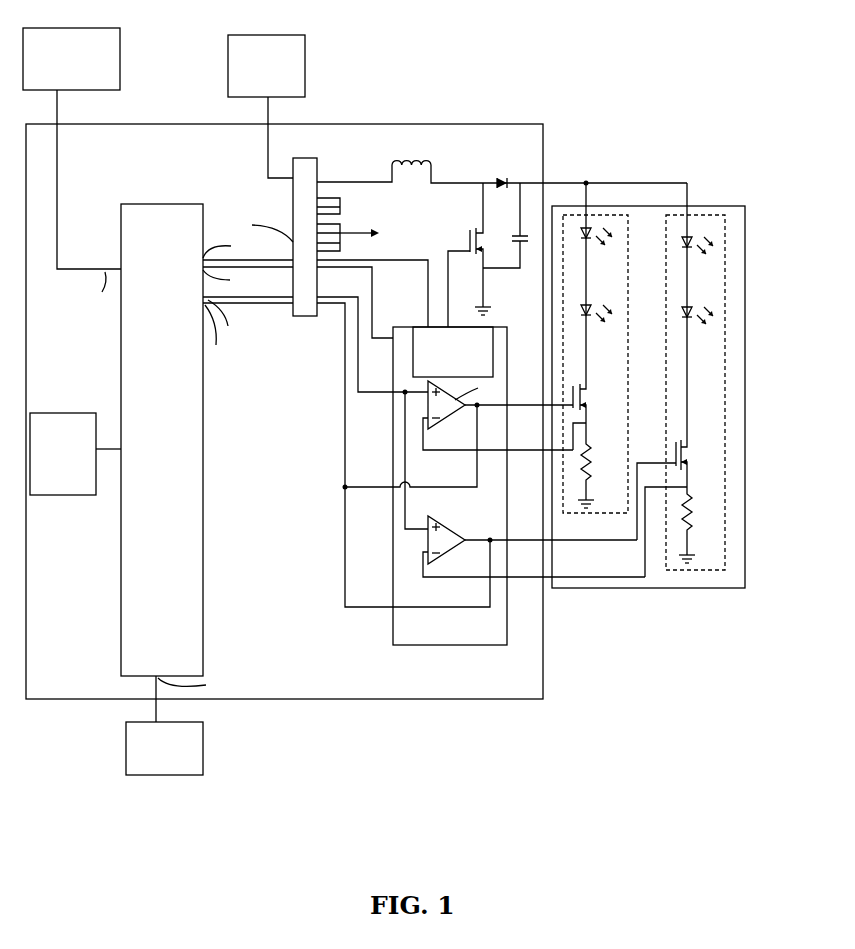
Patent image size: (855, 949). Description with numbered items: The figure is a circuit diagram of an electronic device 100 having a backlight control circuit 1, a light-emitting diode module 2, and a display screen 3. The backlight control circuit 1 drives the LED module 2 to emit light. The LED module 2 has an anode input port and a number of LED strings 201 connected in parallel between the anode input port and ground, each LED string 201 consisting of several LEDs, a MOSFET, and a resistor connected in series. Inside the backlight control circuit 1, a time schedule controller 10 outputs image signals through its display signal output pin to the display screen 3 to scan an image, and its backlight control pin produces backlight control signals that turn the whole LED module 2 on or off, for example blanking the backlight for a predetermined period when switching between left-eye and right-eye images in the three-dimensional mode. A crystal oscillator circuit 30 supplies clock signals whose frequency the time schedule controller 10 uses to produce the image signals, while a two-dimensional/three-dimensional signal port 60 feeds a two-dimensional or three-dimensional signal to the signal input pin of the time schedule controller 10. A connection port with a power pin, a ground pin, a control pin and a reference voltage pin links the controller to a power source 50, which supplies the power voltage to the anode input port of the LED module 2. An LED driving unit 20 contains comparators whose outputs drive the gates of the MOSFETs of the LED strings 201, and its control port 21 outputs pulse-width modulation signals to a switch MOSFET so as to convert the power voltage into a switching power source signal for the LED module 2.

The electronic device 100 is at (578, 68).
The backlight control circuit 1 is at (395, 124).
The light-emitting diode (LED) module 2 is at (716, 206).
The LED string 201 is at (725, 300).
The display screen 3 is at (203, 748).
The time schedule controller 10 is at (203, 482).
The LED driving unit 20 is at (507, 345).
The control port 21 is at (493, 345).
The crystal oscillator circuit 30 is at (55, 413).
The power source 50 is at (305, 63).
The 2D/3D signal port 60 is at (60, 28).